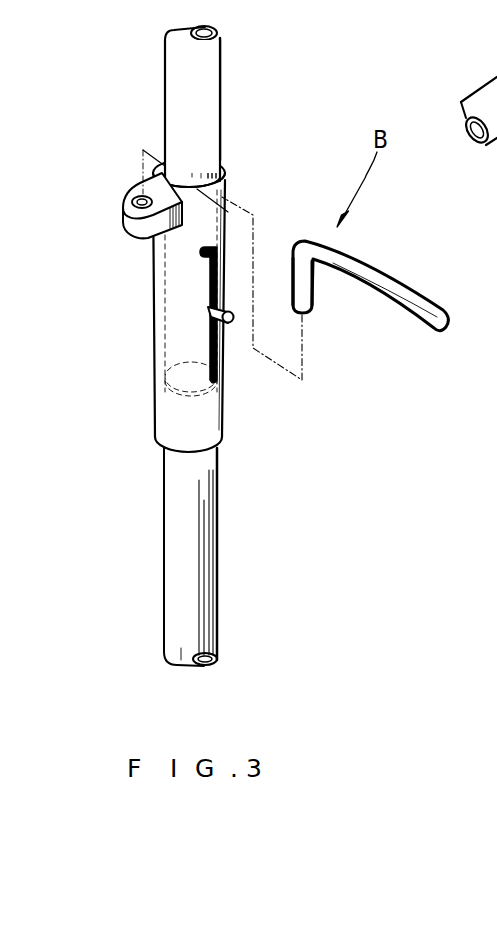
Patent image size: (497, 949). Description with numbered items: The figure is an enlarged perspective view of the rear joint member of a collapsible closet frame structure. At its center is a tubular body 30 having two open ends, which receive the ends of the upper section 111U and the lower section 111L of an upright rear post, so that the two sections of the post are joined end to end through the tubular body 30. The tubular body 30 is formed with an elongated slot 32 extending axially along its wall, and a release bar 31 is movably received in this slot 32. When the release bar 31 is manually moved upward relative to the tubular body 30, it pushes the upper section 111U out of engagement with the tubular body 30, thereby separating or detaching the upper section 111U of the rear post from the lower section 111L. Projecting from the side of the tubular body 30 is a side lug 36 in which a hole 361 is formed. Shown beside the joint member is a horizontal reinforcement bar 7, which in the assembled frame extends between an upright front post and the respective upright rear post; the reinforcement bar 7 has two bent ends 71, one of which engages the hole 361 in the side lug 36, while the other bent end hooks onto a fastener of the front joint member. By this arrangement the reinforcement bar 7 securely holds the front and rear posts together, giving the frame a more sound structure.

The upper section 111U is at (207, 83).
The lower section 111L is at (192, 523).
The tubular body 30 is at (207, 207).
The elongated slot 32 is at (218, 274).
The release bar 31 is at (230, 321).
The side lug 36 is at (142, 240).
The hole 361 is at (140, 198).
The horizontal reinforcement bar 7 is at (410, 292).
The bent end 71 is at (313, 293).